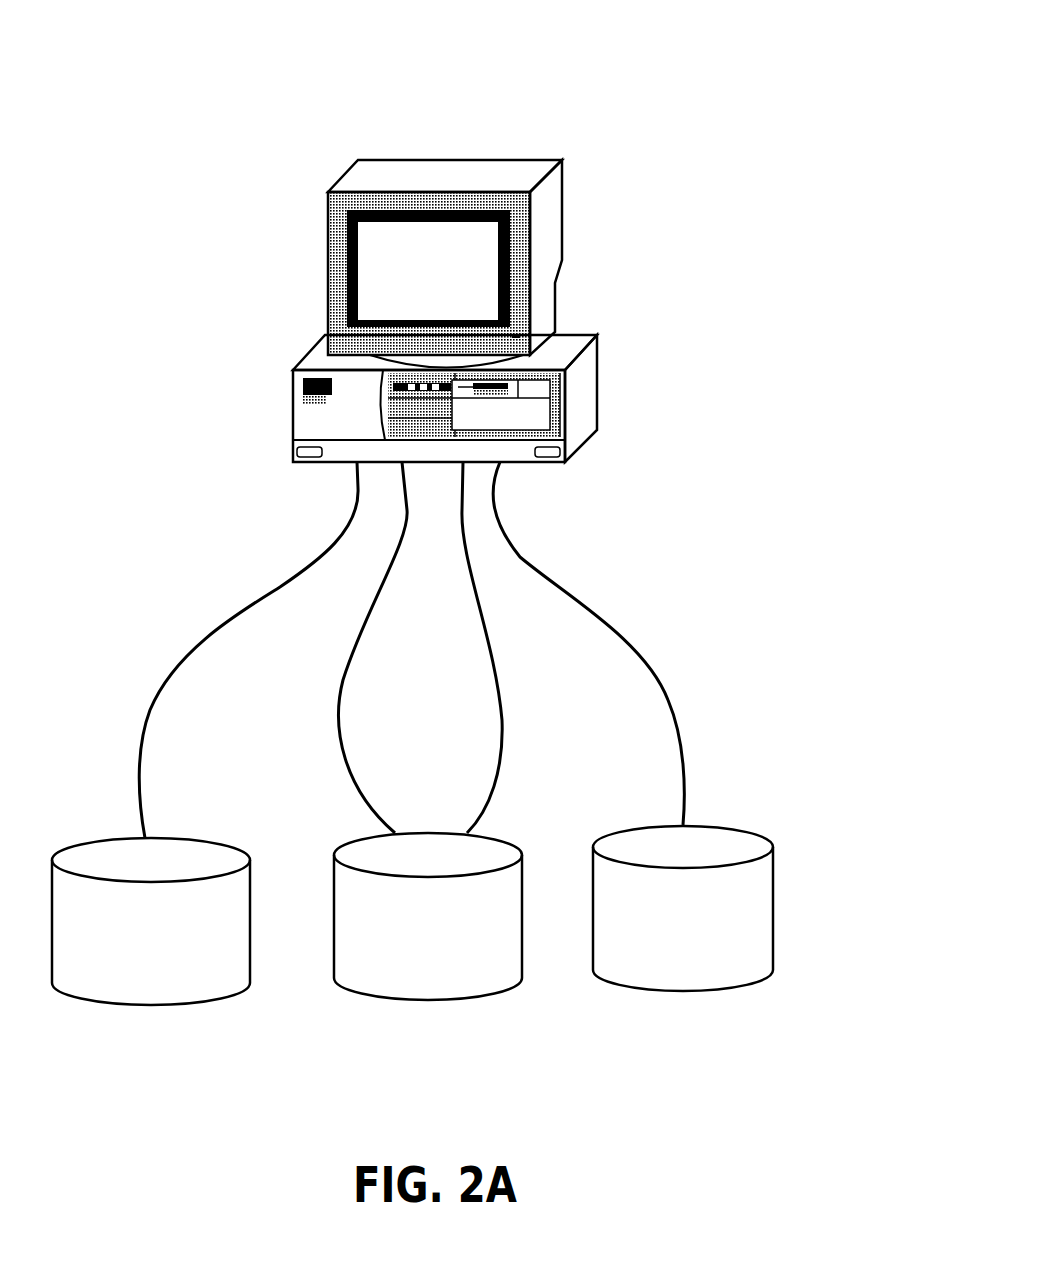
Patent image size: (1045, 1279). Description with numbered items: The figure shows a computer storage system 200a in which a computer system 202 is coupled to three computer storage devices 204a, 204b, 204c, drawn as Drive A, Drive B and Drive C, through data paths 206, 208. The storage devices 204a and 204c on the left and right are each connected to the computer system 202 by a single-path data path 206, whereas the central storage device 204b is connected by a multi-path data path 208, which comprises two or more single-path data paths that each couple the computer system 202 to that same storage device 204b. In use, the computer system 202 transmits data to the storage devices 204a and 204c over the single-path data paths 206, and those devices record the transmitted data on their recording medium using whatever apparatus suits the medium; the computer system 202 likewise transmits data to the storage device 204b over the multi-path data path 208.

The computer storage system 200a is at (626, 58).
The computer system 202 is at (568, 211).
The computer storage device 204a is at (175, 972).
The computer storage device 204b is at (458, 968).
The computer storage device 204c is at (713, 962).
The single-path data path 206 is at (226, 615).
The multi-path data path 208 is at (496, 772).